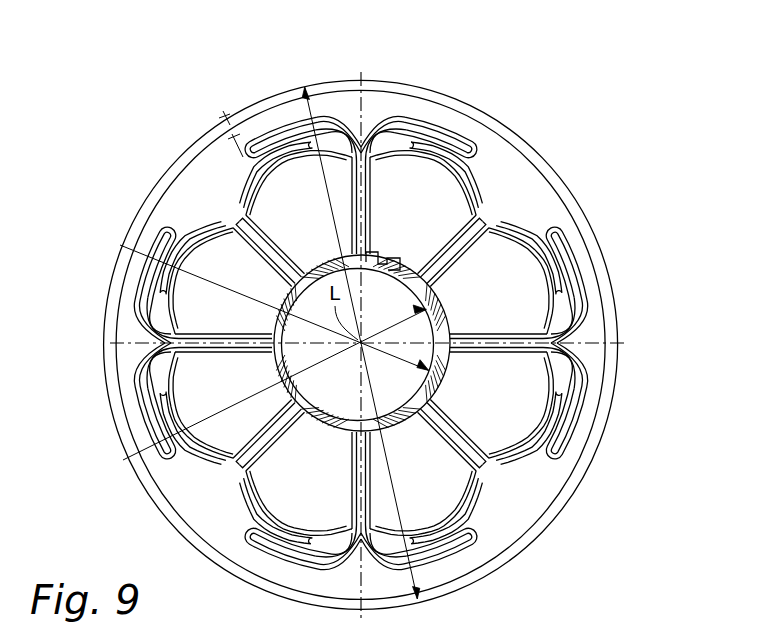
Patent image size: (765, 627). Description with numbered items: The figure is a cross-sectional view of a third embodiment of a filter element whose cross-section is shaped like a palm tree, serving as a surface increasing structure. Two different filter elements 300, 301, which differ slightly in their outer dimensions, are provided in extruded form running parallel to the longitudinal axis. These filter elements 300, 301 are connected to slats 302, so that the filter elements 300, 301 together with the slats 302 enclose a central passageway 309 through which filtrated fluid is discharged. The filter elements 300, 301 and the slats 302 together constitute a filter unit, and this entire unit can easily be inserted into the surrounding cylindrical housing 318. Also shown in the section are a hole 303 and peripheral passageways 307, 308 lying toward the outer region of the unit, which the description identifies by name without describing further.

The filter element 300 is at (452, 126).
The filter element 301 is at (506, 222).
The slat 302 is at (441, 306).
The hole 303 is at (352, 270).
The peripheral passageway 307 is at (384, 150).
The peripheral passageway 308 is at (484, 197).
The central passageway 309 is at (306, 331).
The housing 318 is at (612, 267).